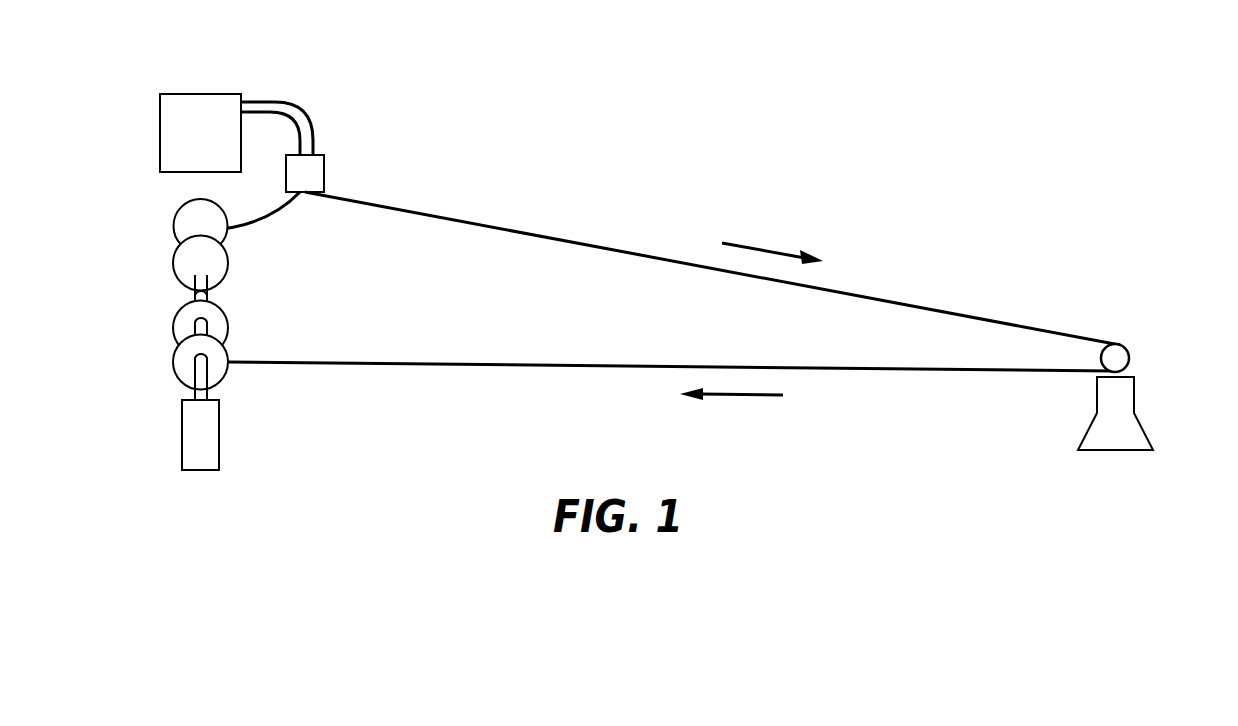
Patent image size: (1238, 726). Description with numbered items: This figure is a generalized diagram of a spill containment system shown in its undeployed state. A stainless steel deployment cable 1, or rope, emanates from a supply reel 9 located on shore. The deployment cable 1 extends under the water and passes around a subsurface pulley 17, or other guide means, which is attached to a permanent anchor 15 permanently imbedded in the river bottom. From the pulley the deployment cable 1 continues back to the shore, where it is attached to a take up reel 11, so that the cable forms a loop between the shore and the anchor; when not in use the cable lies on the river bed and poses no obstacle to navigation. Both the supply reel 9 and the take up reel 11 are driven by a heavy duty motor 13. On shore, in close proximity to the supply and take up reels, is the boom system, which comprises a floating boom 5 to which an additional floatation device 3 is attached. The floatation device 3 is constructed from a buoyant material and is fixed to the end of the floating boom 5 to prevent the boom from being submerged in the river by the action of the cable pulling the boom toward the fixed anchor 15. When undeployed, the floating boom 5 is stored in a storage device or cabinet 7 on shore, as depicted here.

The deployment cable 1 is at (380, 362).
The floatation device 3 is at (324, 170).
The floating boom 5 is at (303, 107).
The storage device or cabinet 7 is at (180, 94).
The supply reel 9 is at (173, 224).
The take up reel 11 is at (173, 323).
The heavy duty motor 13 is at (182, 440).
The permanent anchor 15 is at (1134, 395).
The subsurface pulley 17 is at (1123, 347).